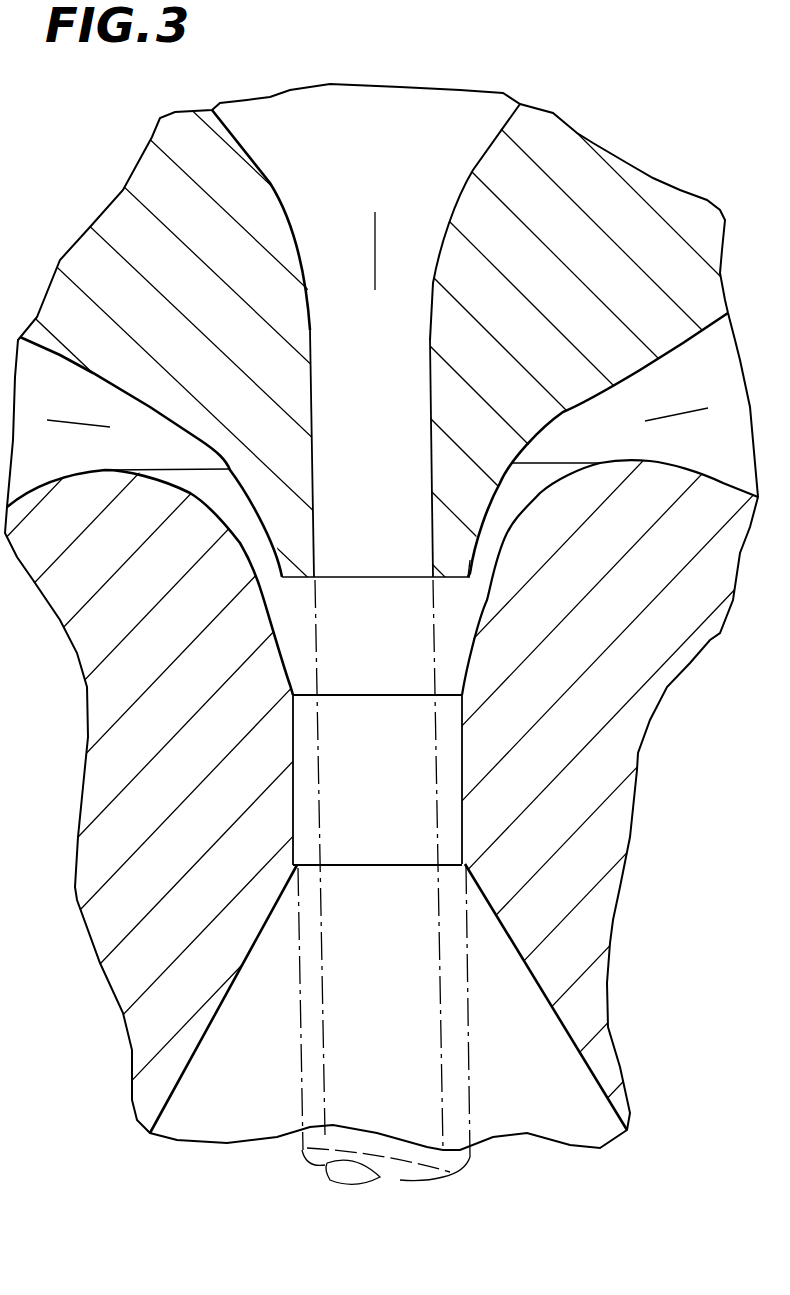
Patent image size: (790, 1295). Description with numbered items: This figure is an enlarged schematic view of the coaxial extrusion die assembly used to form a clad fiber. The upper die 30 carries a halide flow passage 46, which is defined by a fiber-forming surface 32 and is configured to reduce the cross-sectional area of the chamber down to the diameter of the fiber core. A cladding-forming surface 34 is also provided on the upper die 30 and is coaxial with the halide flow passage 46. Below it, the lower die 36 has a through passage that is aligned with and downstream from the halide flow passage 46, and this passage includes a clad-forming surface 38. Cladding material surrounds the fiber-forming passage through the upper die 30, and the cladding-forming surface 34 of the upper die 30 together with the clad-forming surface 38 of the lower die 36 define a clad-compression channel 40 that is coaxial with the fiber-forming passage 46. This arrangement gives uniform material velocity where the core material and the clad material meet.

The upper die 30 is at (215, 246).
The fiber-forming surface 32 is at (430, 312).
The cladding-forming surface 34 is at (637, 367).
The lower die 36 is at (150, 749).
The clad-forming surface 38 is at (598, 466).
The clad-compression channel 40 is at (487, 557).
The halide flow passage 46 is at (377, 232).